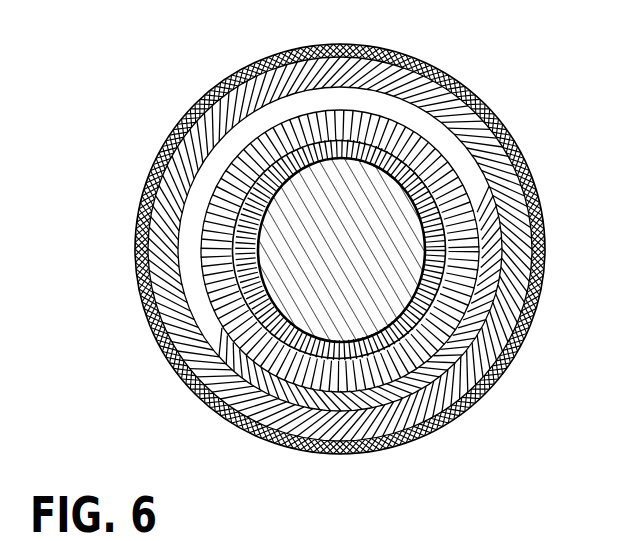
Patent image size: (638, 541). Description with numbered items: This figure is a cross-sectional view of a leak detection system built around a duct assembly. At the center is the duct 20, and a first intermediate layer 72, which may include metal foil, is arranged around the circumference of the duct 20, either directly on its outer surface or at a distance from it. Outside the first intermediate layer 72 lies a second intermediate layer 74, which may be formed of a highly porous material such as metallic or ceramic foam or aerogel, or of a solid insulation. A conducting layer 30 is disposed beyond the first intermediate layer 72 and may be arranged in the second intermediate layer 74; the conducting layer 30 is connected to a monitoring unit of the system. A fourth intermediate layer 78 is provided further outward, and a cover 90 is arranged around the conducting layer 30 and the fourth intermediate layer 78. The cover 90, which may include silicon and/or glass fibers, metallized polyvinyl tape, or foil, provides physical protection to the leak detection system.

The duct 20 is at (392, 300).
The first intermediate layer 72 is at (453, 264).
The second intermediate layer 74 is at (448, 170).
The conducting layer 30 is at (373, 93).
The fourth intermediate layer 78 is at (337, 53).
The cover 90 is at (554, 224).